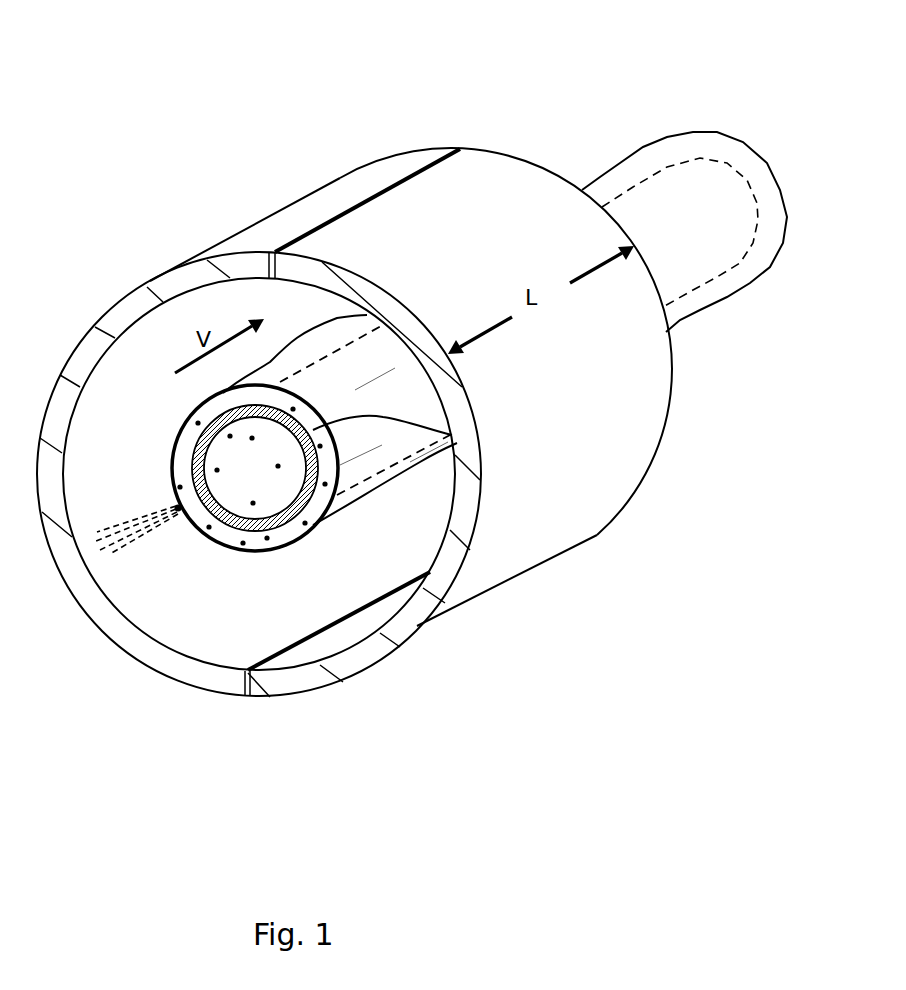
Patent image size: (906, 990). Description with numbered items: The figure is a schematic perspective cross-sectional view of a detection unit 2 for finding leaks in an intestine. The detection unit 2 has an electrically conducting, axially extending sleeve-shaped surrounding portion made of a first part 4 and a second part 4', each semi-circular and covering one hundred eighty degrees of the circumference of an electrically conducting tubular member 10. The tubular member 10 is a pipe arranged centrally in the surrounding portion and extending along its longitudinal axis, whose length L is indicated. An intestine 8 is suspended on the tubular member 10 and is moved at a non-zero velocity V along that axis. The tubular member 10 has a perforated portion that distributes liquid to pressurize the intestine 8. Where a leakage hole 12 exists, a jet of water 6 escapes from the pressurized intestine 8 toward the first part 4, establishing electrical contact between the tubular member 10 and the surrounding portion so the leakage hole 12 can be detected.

The detection unit 2 is at (163, 108).
The first part 4 is at (318, 381).
The second part 4' is at (563, 290).
The jet of water 6 is at (115, 555).
The intestine 8 is at (290, 345).
The tubular member 10 is at (450, 435).
The leakage hole 12 is at (176, 510).